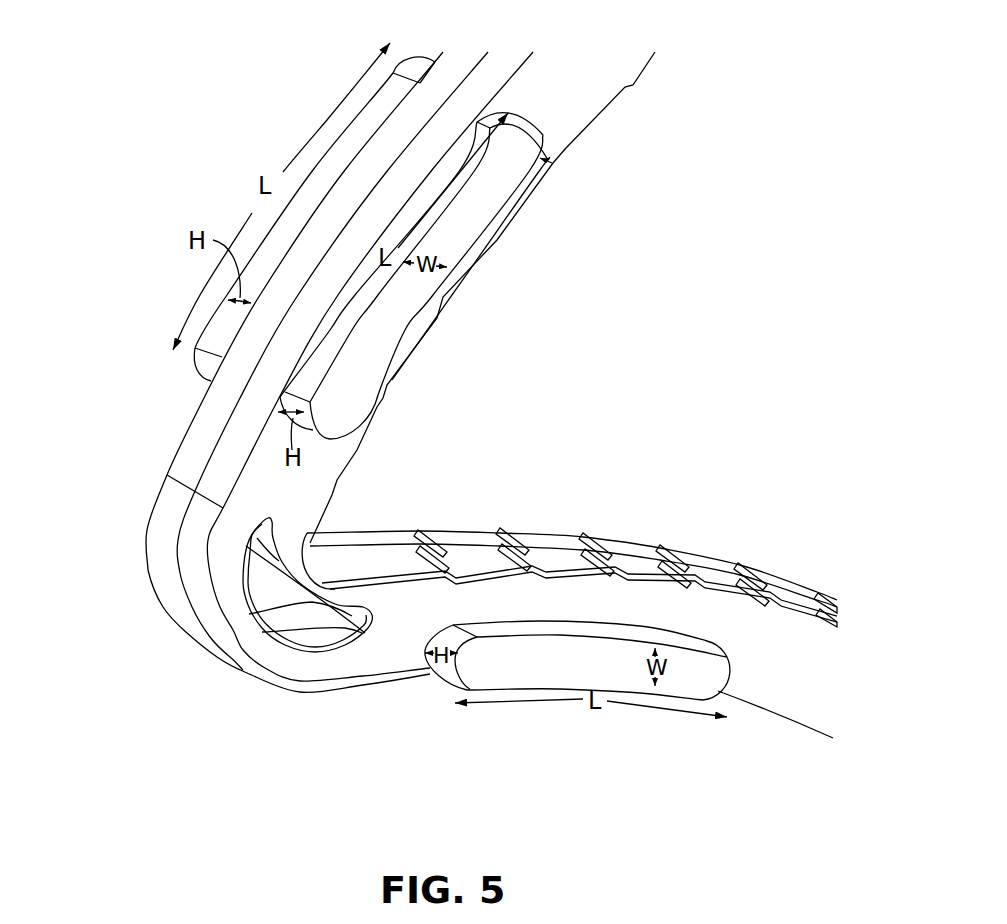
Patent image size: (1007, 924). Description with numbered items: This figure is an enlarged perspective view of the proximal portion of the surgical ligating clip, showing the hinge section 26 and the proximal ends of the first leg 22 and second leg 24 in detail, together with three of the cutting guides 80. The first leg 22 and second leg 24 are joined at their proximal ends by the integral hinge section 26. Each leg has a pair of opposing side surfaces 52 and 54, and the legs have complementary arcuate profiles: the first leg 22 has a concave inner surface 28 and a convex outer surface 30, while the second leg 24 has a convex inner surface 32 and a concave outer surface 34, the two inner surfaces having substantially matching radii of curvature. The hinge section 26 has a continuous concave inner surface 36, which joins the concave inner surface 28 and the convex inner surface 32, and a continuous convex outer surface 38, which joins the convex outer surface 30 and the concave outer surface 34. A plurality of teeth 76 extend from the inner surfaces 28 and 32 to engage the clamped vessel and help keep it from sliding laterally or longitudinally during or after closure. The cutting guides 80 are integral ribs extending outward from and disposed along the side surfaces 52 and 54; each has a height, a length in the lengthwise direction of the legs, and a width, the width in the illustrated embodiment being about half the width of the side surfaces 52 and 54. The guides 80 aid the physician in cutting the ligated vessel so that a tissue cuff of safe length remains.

The first leg 22 is at (812, 702).
The second leg 24 is at (587, 97).
The hinge section 26 is at (145, 641).
The concave inner surface 28 is at (633, 553).
The convex outer surface 30 is at (763, 708).
The convex inner surface 32 is at (363, 440).
The concave outer surface 34 is at (217, 440).
The concave inner surface 36 is at (332, 545).
The convex outer surface 38 is at (213, 648).
The side surface 52 is at (563, 99).
The side surface 54 is at (193, 424).
The teeth 76 is at (500, 533).
The cutting guides 80 is at (337, 160).